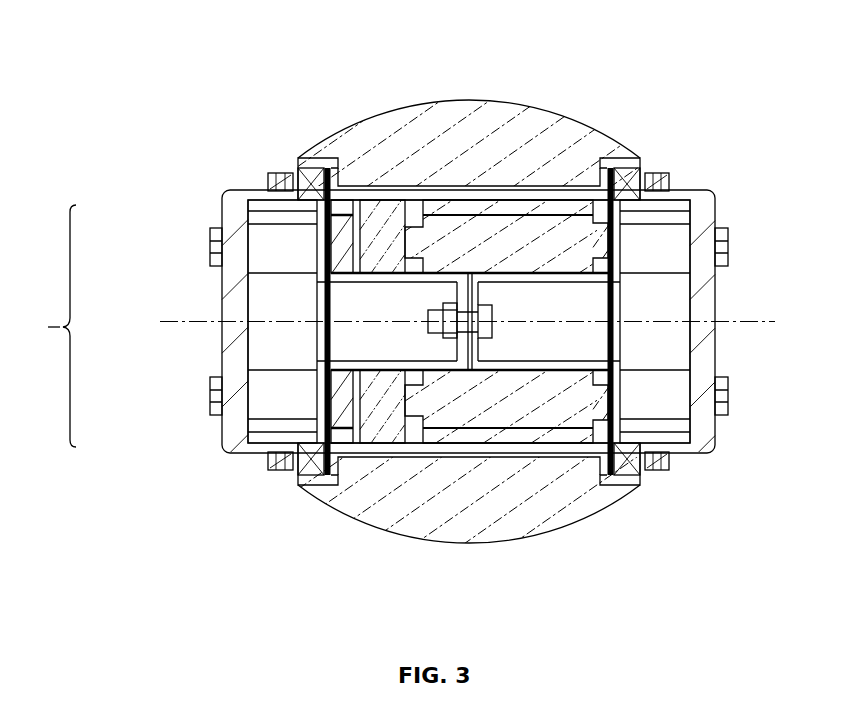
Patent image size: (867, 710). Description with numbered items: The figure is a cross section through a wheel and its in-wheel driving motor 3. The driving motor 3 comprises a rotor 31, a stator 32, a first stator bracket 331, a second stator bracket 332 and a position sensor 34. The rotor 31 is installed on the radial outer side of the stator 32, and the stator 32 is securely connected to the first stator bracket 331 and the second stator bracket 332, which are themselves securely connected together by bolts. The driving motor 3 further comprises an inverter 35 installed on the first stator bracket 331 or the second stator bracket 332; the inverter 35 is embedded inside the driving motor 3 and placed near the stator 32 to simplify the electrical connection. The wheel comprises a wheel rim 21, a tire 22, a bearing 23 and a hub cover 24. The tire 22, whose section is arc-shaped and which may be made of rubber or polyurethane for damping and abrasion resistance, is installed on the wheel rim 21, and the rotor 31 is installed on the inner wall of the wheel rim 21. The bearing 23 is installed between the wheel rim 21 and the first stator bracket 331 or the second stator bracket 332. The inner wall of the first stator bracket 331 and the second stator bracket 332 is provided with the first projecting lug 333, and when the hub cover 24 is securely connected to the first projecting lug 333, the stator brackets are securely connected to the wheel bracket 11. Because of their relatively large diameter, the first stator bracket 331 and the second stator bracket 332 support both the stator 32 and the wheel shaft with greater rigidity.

The driving motor 3 is at (81, 325).
The wheel bracket 11 is at (285, 195).
The wheel rim 21 is at (407, 505).
The tire 22 is at (445, 453).
The bearing 23 is at (307, 485).
The hub cover 24 is at (252, 453).
The rotor 31 is at (478, 200).
The stator 32 is at (515, 242).
The first stator bracket 331 is at (442, 272).
The second stator bracket 332 is at (556, 272).
The first projecting lug 333 is at (254, 237).
The position sensor 34 is at (346, 243).
The inverter 35 is at (380, 227).